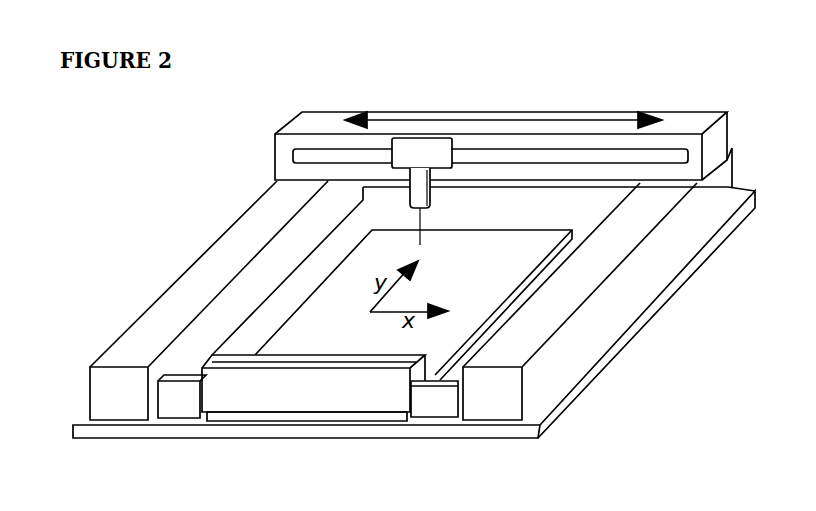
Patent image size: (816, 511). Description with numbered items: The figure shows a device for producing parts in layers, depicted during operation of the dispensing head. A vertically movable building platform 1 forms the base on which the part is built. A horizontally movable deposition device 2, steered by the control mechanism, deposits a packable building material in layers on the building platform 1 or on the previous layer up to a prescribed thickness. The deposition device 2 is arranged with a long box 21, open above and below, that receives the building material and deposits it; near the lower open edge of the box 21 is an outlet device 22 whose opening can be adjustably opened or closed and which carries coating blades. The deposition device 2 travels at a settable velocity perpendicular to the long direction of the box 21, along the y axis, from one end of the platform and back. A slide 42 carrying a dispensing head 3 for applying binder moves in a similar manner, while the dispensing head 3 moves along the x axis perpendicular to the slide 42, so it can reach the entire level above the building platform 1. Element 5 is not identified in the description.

The building platform 1 is at (343, 300).
The deposition device 2 is at (307, 392).
The dispensing head 3 is at (413, 185).
The carriage 5 is at (433, 148).
The box 21 is at (240, 326).
The outlet device 22 is at (245, 413).
The slide 42 is at (675, 125).